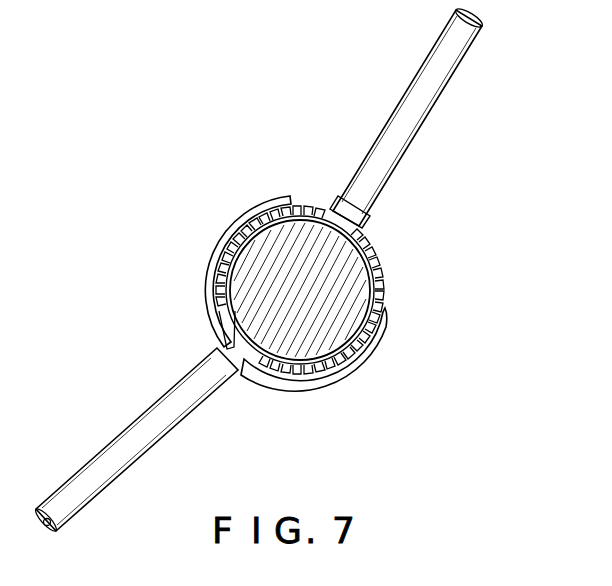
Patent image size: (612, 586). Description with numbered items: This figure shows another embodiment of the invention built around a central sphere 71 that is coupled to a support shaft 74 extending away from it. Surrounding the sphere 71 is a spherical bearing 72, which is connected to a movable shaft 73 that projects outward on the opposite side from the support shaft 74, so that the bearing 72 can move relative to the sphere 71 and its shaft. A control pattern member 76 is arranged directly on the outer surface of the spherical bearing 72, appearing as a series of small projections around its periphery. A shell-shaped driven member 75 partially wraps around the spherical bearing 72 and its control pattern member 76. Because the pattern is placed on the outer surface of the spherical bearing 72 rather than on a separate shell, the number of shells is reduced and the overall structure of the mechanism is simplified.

The sphere 71 is at (247, 302).
The spherical bearing 72 is at (378, 268).
The movable shaft 73 is at (437, 88).
The support shaft 74 is at (112, 447).
The shell-shaped driven member 75 is at (283, 387).
The control pattern member 76 is at (373, 253).